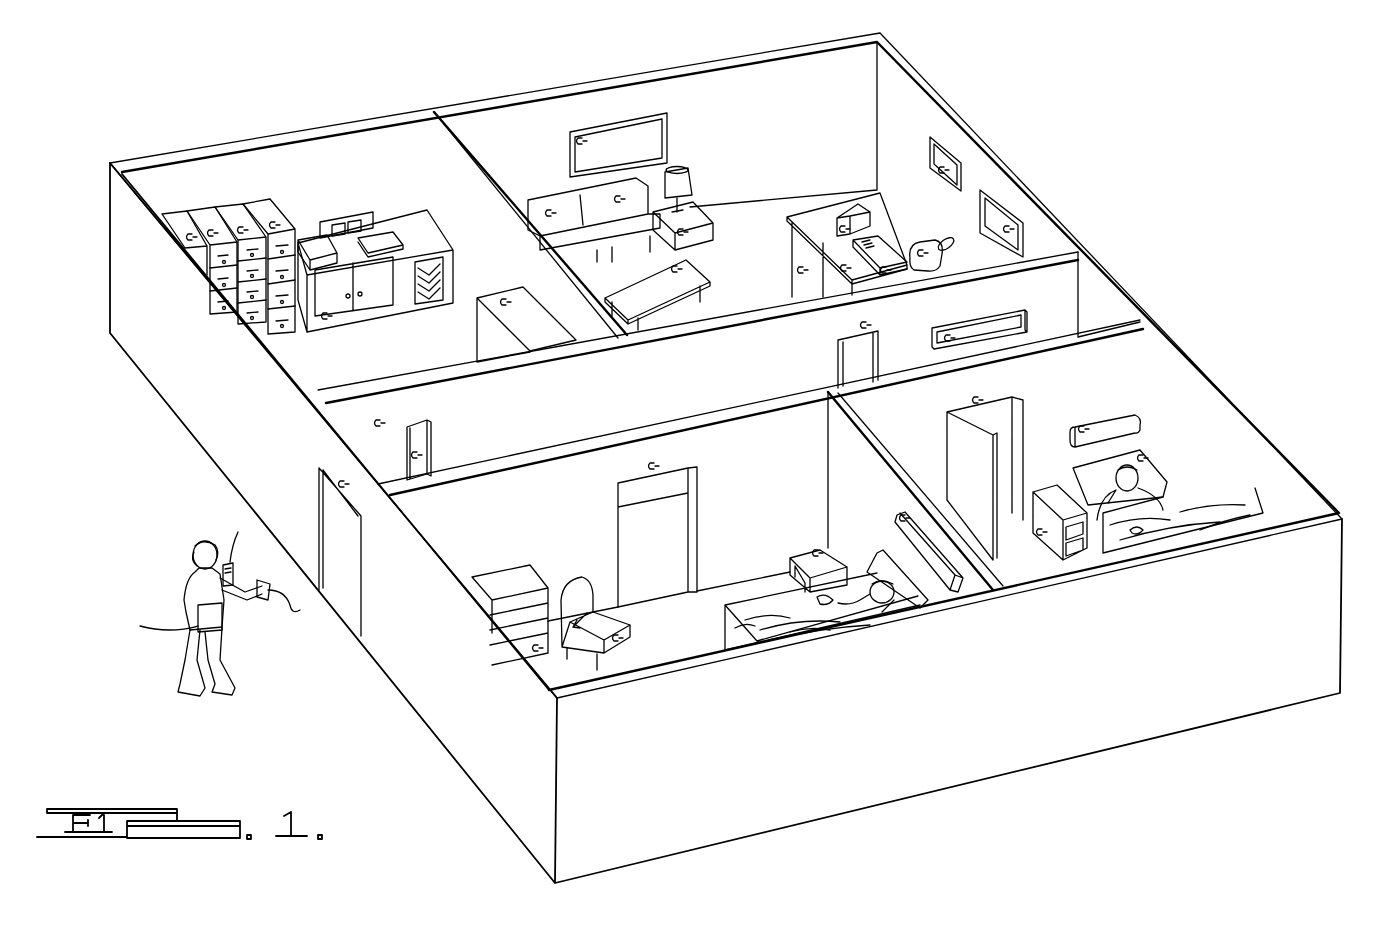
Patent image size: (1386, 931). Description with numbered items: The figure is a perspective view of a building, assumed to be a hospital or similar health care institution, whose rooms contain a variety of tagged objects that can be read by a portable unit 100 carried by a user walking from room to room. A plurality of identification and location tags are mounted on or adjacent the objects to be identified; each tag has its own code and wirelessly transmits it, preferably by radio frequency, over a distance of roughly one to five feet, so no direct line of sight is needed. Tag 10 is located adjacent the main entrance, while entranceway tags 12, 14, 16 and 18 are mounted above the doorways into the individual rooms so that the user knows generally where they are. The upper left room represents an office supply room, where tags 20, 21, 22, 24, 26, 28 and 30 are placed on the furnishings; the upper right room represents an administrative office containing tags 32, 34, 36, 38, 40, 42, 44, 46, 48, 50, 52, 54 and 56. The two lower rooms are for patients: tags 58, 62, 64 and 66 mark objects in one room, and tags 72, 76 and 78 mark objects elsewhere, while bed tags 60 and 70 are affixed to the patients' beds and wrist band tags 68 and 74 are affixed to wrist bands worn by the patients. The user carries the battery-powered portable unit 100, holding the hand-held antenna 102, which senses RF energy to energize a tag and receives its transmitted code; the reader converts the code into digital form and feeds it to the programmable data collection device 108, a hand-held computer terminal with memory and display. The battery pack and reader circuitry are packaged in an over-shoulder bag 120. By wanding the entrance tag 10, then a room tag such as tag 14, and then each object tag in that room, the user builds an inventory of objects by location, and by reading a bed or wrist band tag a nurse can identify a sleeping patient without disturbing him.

The location tag 10 is at (341, 480).
The entranceway tag 12 is at (390, 422).
The entranceway tag 14 is at (858, 324).
The entranceway tag 16 is at (663, 465).
The entranceway tag 18 is at (968, 399).
The identification tag 20 is at (503, 300).
The identification tag 21 is at (433, 458).
The identification tag 22 is at (327, 320).
The identification tag 24 is at (276, 224).
The identification tag 26 is at (244, 228).
The identification tag 28 is at (213, 231).
The identification tag 30 is at (191, 234).
The identification tag 32 is at (1022, 225).
The identification tag 34 is at (932, 170).
The identification tag 36 is at (921, 250).
The identification tag 38 is at (893, 276).
The identification tag 40 is at (832, 230).
The identification tag 42 is at (798, 270).
The identification tag 44 is at (808, 291).
The identification tag 46 is at (688, 229).
The identification tag 48 is at (694, 186).
The identification tag 50 is at (588, 137).
The identification tag 52 is at (622, 196).
The identification tag 54 is at (549, 209).
The identification tag 56 is at (680, 275).
The identification tag 58 is at (898, 517).
The bed tag 60 is at (873, 555).
The identification tag 62 is at (815, 550).
The identification tag 64 is at (622, 641).
The identification tag 66 is at (533, 659).
The wrist band tag 68 is at (832, 607).
The bed tag 70 is at (1148, 458).
The identification tag 72 is at (1083, 426).
The wrist band tag 74 is at (1170, 503).
The identification tag 76 is at (1038, 534).
The identification tag 78 is at (960, 334).
The portable unit 100 is at (255, 643).
The antenna 102 is at (299, 612).
The programmable data collection device 108 is at (233, 544).
The over-shoulder bag 120 is at (147, 620).